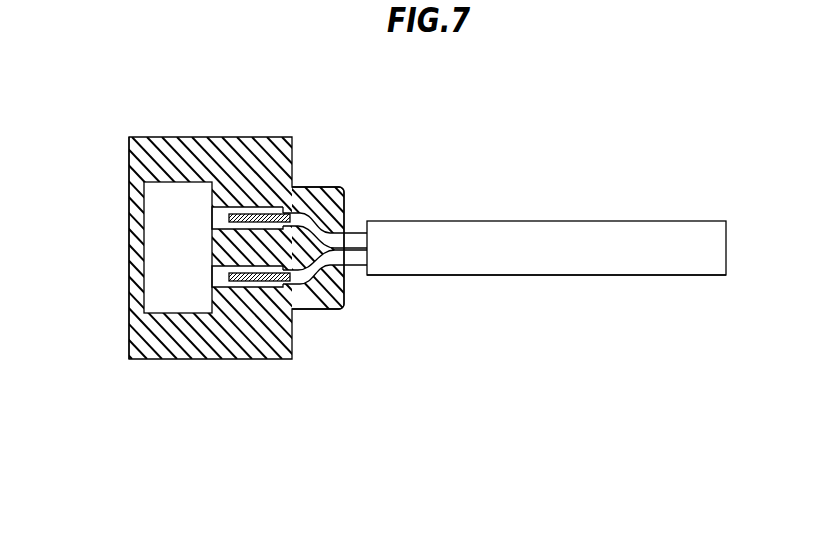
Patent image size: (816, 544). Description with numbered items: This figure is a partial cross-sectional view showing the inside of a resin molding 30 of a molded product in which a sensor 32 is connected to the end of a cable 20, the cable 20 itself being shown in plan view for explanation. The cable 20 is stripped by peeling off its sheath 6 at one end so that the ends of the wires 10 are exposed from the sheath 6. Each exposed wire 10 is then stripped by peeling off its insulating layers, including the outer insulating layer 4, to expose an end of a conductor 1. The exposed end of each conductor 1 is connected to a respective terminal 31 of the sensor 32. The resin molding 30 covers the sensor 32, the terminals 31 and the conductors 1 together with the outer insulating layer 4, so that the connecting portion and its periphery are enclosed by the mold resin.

The conductor 1 is at (258, 281).
The outer insulating layer 4 is at (320, 225).
The sheath 6 is at (568, 263).
The wire 10 is at (319, 274).
The cable 20 is at (571, 221).
The resin molding 30 is at (174, 137).
The terminal 31 is at (257, 213).
The sensor 32 is at (133, 198).